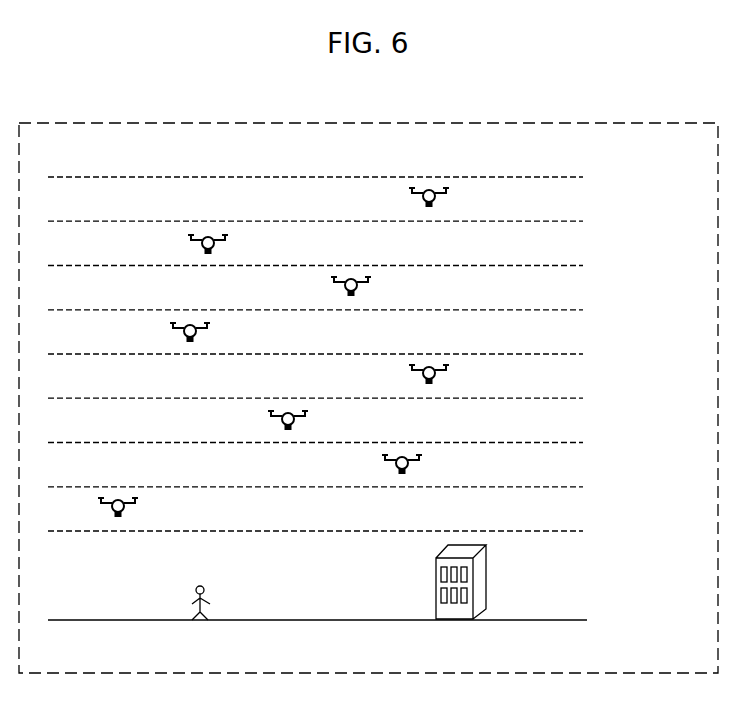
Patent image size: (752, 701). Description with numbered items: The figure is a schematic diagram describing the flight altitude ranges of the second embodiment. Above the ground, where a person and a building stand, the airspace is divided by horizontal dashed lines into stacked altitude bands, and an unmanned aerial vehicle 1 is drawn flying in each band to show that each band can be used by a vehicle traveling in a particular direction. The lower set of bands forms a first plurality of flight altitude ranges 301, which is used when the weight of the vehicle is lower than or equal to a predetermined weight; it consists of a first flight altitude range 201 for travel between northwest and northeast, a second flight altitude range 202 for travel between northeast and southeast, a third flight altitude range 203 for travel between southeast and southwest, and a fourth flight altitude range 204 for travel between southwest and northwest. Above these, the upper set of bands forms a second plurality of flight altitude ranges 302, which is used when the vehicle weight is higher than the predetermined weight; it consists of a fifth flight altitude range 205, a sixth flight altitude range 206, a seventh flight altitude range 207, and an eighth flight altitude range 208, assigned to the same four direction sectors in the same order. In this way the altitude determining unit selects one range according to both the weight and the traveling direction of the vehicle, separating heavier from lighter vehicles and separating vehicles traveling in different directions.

The unmanned aerial vehicle 1 is at (430, 367).
The first flight altitude range 201 is at (341, 362).
The second flight altitude range 202 is at (583, 398).
The third flight altitude range 203 is at (583, 442).
The fourth flight altitude range 204 is at (341, 509).
The fifth flight altitude range 205 is at (583, 177).
The sixth flight altitude range 206 is at (583, 221).
The seventh flight altitude range 207 is at (583, 266).
The eighth flight altitude range 208 is at (341, 332).
The first plurality of flight altitude ranges 301 is at (375, 428).
The second plurality of flight altitude ranges 302 is at (375, 265).